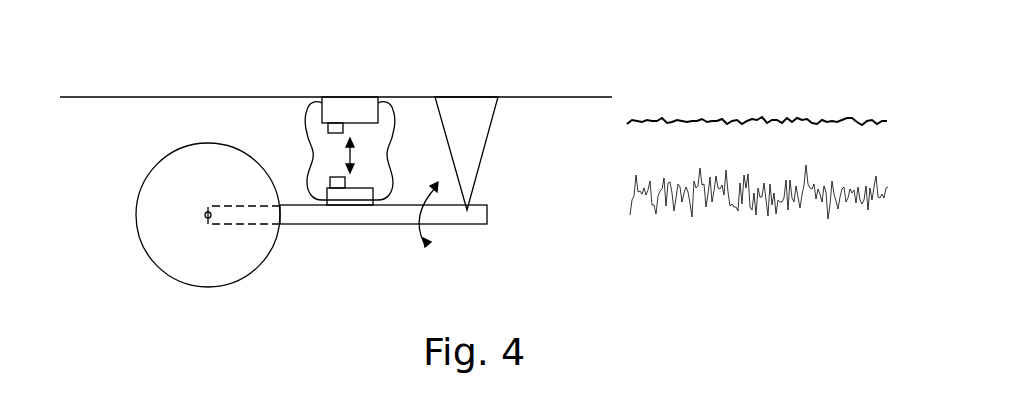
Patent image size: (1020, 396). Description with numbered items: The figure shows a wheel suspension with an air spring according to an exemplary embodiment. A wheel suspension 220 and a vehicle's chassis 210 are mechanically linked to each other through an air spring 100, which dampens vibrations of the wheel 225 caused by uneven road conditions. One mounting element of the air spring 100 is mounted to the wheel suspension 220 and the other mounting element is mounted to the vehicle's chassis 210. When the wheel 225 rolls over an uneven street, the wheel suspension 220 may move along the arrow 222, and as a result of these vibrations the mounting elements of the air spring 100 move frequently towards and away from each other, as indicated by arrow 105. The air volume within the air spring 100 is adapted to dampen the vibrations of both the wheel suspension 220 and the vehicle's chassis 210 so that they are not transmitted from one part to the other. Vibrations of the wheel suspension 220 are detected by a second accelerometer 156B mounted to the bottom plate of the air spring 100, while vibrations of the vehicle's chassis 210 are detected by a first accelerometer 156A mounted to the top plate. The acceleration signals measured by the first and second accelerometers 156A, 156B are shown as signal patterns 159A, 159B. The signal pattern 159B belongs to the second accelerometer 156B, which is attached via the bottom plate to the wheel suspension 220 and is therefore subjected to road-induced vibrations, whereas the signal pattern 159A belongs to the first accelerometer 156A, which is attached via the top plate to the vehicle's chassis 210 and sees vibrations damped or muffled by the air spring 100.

The air spring 100 is at (312, 150).
The arrow 105 is at (357, 152).
The first accelerometer 156A is at (327, 130).
The second accelerometer 156B is at (337, 186).
The vehicle's chassis 210 is at (580, 97).
The wheel suspension 220 is at (405, 215).
The arrow 222 is at (428, 234).
The wheel 225 is at (136, 213).
The signal pattern 159A is at (675, 117).
The signal pattern 159B is at (733, 213).